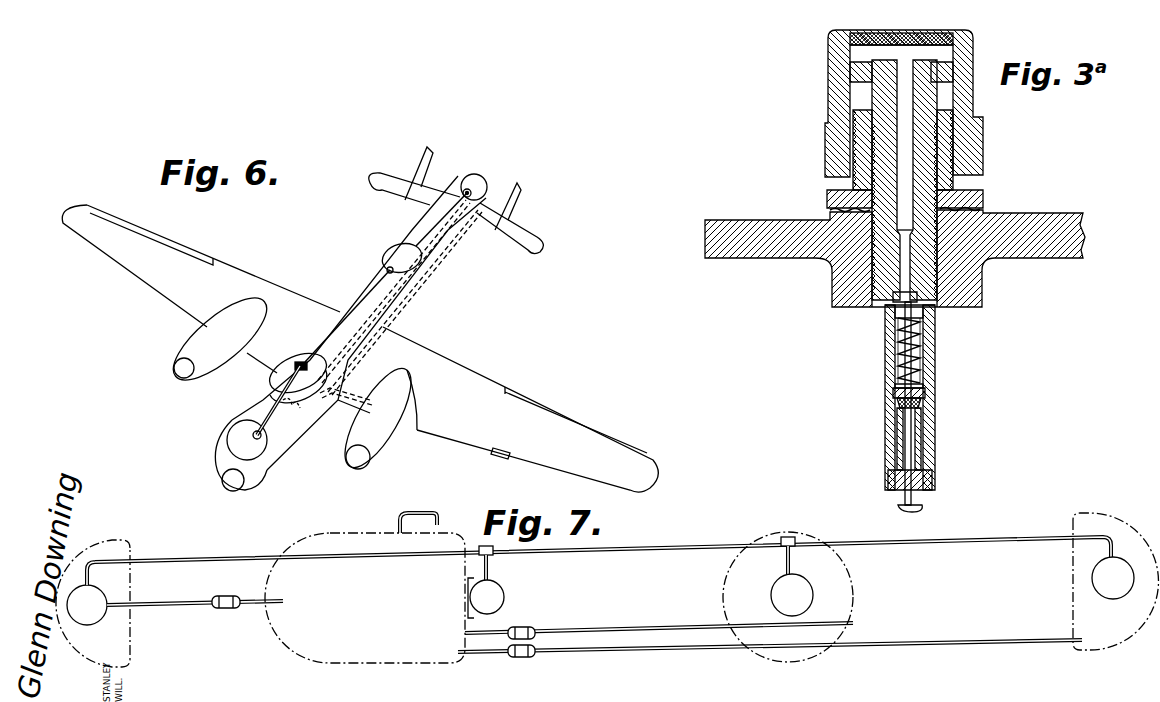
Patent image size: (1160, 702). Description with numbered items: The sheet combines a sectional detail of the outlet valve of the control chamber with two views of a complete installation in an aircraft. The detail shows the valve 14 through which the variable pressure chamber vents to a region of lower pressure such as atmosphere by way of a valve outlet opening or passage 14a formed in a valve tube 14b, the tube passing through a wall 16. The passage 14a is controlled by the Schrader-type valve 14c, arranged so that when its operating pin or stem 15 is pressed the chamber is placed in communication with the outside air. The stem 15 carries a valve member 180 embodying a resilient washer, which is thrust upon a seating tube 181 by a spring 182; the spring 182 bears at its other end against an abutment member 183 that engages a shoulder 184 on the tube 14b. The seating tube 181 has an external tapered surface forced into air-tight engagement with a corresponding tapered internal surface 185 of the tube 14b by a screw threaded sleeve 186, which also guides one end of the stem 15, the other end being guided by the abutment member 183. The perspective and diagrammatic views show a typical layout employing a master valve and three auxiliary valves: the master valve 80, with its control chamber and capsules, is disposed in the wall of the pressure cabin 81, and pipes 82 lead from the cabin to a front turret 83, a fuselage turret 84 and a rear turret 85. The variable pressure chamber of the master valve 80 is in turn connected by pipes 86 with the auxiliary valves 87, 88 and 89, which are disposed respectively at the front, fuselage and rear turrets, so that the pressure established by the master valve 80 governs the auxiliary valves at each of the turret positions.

In FIG. 3A, the valve 14 is at (932, 392).
In FIG. 3A, the valve outlet opening or passage 14a is at (897, 272).
In FIG. 3A, the valve tube 14b is at (935, 445).
In FIG. 3A, the valve 14c is at (893, 397).
In FIG. 3A, the stem 15 is at (913, 500).
In FIG. 3A, the wall plate 16 is at (1057, 217).
In FIG. 3A, the valve member 180 is at (913, 380).
In FIG. 3A, the seating tube 181 is at (920, 407).
In FIG. 3A, the spring 182 is at (935, 337).
In FIG. 3A, the abutment member 183 is at (902, 316).
In FIG. 3A, the shoulder 184 is at (880, 307).
In FIG. 3A, the tapered internal surface 185 is at (890, 440).
In FIG. 3A, the screw threaded sleeve 186 is at (895, 483).
In FIG. 6, the master valve 80 is at (300, 357).
In FIG. 7, the master valve 80 is at (498, 591).
In FIG. 6, the pressure cabin 81 is at (330, 370).
In FIG. 7, the pressure cabin 81 is at (382, 647).
In FIG. 6, the pipes 82 is at (400, 287).
In FIG. 7, the pipes 82 is at (185, 606).
In FIG. 6, the front turret 83 is at (260, 452).
In FIG. 7, the front turret 83 is at (122, 542).
In FIG. 6, the fuselage turret 84 is at (410, 258).
In FIG. 7, the fuselage turret 84 is at (780, 535).
In FIG. 6, the rear turret 85 is at (478, 180).
In FIG. 7, the rear turret 85 is at (1096, 516).
In FIG. 6, the pipes 86 is at (265, 407).
In FIG. 7, the pipes 86 is at (192, 557).
In FIG. 7, the valve 87 is at (98, 601).
In FIG. 7, the valve 88 is at (785, 592).
In FIG. 7, the valve 89 is at (1108, 578).